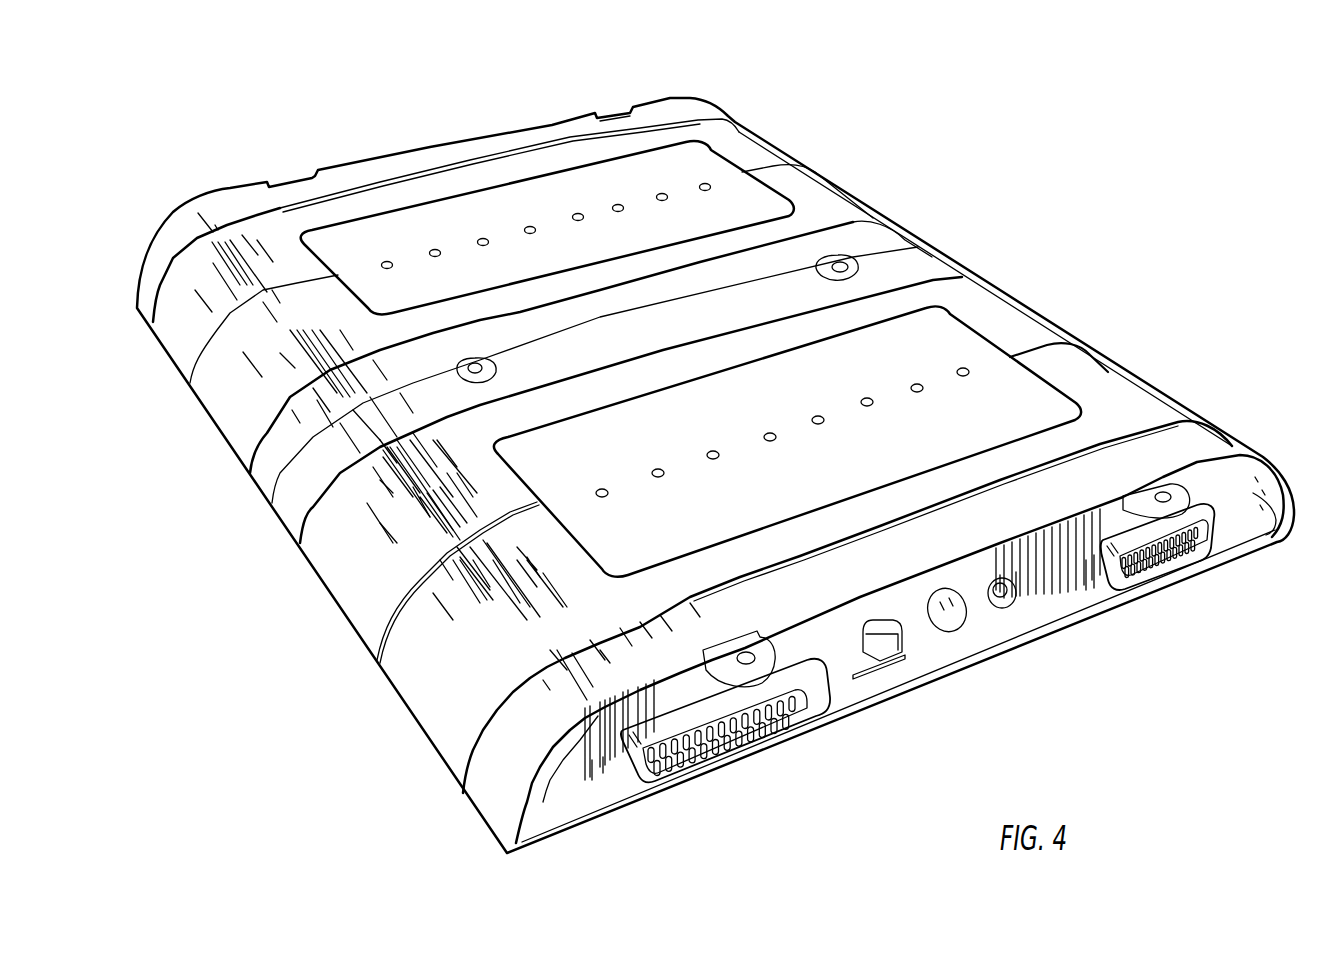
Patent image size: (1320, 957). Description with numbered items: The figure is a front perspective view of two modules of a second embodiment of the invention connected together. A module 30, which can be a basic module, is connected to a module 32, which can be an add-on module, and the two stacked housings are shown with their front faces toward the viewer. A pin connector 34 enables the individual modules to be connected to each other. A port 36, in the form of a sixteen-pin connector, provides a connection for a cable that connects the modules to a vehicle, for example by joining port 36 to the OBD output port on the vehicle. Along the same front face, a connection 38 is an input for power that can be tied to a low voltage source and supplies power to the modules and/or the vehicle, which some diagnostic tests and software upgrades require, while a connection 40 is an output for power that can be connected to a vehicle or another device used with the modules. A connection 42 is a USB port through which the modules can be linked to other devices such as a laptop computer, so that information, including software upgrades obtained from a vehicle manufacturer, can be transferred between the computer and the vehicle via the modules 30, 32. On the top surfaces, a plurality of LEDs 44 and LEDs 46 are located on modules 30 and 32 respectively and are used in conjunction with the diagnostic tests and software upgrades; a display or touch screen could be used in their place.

The module 30 is at (765, 140).
The module 32 is at (955, 256).
The pin connector 34 is at (657, 760).
The port 36 is at (1190, 553).
The connection 38 is at (1010, 605).
The connection 40 is at (952, 626).
The USB port 42 is at (880, 655).
The LEDs 44 is at (617, 205).
The LEDs 46 is at (925, 382).